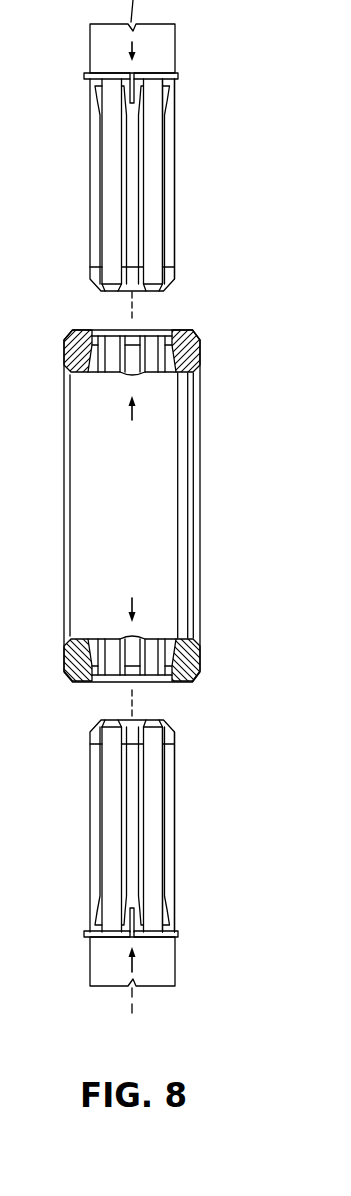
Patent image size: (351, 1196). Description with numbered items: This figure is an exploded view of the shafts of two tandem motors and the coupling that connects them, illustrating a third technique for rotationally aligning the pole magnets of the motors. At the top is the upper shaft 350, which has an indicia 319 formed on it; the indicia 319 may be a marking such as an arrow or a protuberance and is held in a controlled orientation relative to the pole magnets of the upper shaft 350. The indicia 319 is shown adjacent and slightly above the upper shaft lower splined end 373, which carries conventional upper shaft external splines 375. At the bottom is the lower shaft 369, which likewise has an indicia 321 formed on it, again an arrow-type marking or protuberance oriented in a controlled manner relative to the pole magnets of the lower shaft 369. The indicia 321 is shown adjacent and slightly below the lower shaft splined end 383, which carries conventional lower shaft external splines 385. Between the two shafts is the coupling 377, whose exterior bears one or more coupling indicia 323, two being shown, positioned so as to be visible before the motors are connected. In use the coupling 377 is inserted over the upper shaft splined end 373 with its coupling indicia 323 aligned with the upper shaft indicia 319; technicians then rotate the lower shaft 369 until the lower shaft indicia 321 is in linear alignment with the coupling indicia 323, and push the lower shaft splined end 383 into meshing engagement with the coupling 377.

The upper shaft 350 is at (97, 49).
The upper shaft indicia 319 is at (133, 58).
The upper shaft lower splined end 373 is at (168, 117).
The upper shaft external splines 375 is at (135, 185).
The coupling 377 is at (188, 518).
The coupling indicia 323 is at (135, 617).
The lower shaft splined end 383 is at (170, 803).
The lower shaft external splines 385 is at (140, 826).
The lower shaft indicia 321 is at (125, 957).
The lower shaft 369 is at (163, 962).